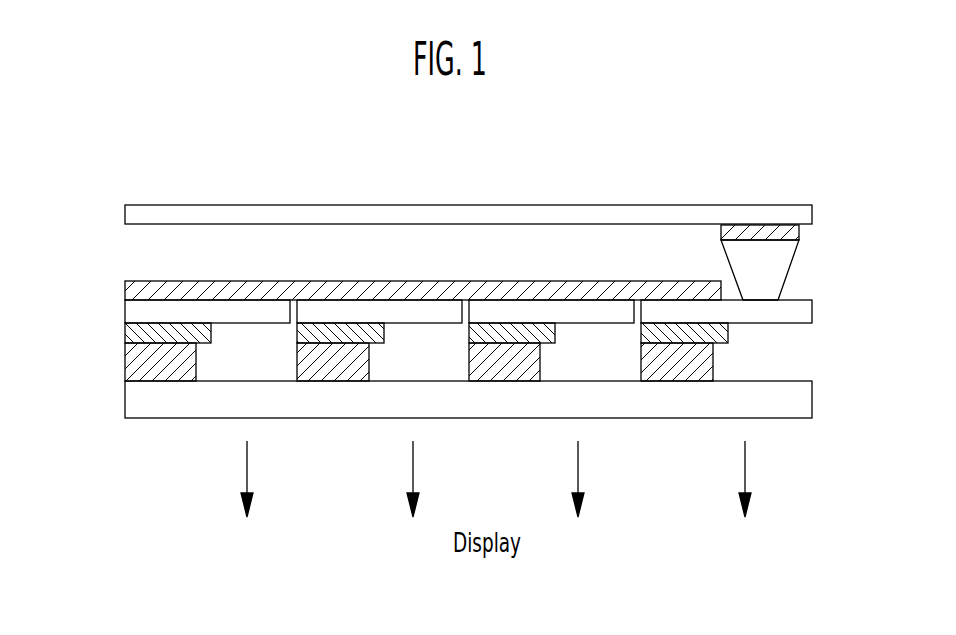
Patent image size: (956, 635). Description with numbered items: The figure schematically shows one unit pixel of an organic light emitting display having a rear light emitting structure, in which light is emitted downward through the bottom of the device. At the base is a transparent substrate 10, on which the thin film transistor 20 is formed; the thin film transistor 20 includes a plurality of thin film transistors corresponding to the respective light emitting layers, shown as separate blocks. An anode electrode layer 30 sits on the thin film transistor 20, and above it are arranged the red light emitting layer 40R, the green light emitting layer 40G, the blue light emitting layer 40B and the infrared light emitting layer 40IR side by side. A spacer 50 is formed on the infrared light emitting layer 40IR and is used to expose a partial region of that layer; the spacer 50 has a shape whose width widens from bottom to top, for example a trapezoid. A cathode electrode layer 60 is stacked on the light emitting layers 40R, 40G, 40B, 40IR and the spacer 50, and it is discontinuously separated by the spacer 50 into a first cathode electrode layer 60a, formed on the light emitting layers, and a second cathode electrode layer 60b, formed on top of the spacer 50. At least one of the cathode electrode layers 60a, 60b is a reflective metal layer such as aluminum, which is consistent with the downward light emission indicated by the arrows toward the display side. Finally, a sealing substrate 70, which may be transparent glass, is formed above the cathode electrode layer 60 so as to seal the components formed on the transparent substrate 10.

The transparent substrate 10 is at (140, 411).
The thin film transistor 20 is at (140, 376).
The anode electrode layer 30 is at (140, 338).
The red light emitting layer 40R is at (207, 311).
The green light emitting layer 40G is at (379, 311).
The blue light emitting layer 40B is at (551, 311).
The infrared light emitting layer 40IR is at (726, 311).
The spacer 50 is at (778, 271).
The cathode electrode layer 60 is at (435, 210).
The first cathode electrode layer 60a is at (695, 292).
The second cathode electrode layer 60b is at (760, 195).
The sealing substrate 70 is at (140, 212).